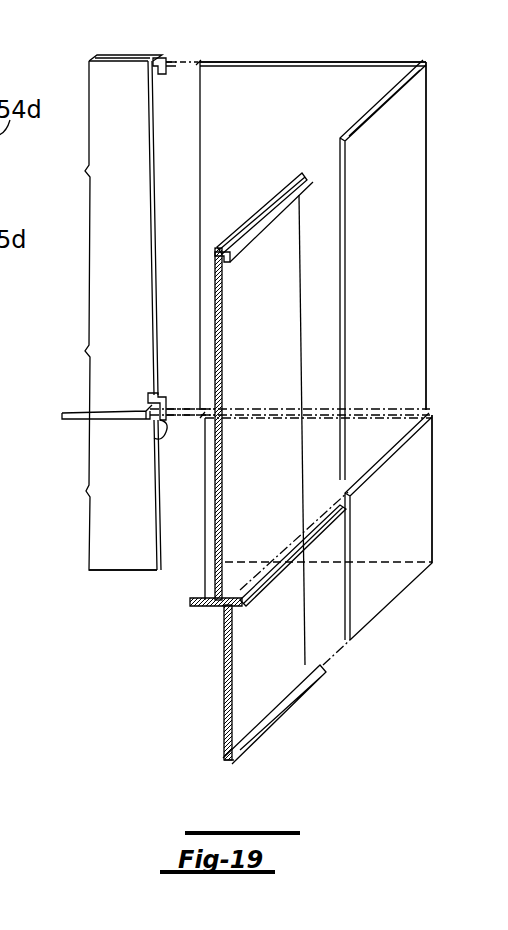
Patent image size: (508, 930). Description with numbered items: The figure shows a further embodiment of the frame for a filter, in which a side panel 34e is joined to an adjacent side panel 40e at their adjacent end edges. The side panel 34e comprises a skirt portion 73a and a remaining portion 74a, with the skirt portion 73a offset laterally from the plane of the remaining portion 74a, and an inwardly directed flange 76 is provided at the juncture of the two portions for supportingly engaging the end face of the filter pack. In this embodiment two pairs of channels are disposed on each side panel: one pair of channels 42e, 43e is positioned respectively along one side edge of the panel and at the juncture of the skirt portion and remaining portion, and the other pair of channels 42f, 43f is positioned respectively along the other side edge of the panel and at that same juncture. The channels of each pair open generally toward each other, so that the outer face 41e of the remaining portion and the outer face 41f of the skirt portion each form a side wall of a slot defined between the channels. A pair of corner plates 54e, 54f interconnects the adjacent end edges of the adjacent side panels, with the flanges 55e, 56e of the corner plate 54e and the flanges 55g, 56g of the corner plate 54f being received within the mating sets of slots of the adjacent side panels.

The side panel 40e is at (145, 211).
The channel 42e is at (159, 72).
The channel 43e is at (164, 406).
The channel 42f is at (162, 426).
The inwardly directed flange 76 is at (66, 414).
The outer face of the side panel 41e is at (274, 363).
The flange of corner plate 56e is at (274, 70).
The flange of corner plate 55e is at (406, 226).
The corner plate 54e is at (438, 140).
The remaining portion of the side panel 74a is at (214, 328).
The outer face of the side panel 41f is at (280, 673).
The flange of corner plate 56g is at (308, 460).
The flange of corner plate 55g is at (425, 542).
The corner plate 54f is at (478, 484).
The skirt portion 73a is at (226, 690).
The channel 43f is at (226, 730).
The side panel 34e is at (192, 572).